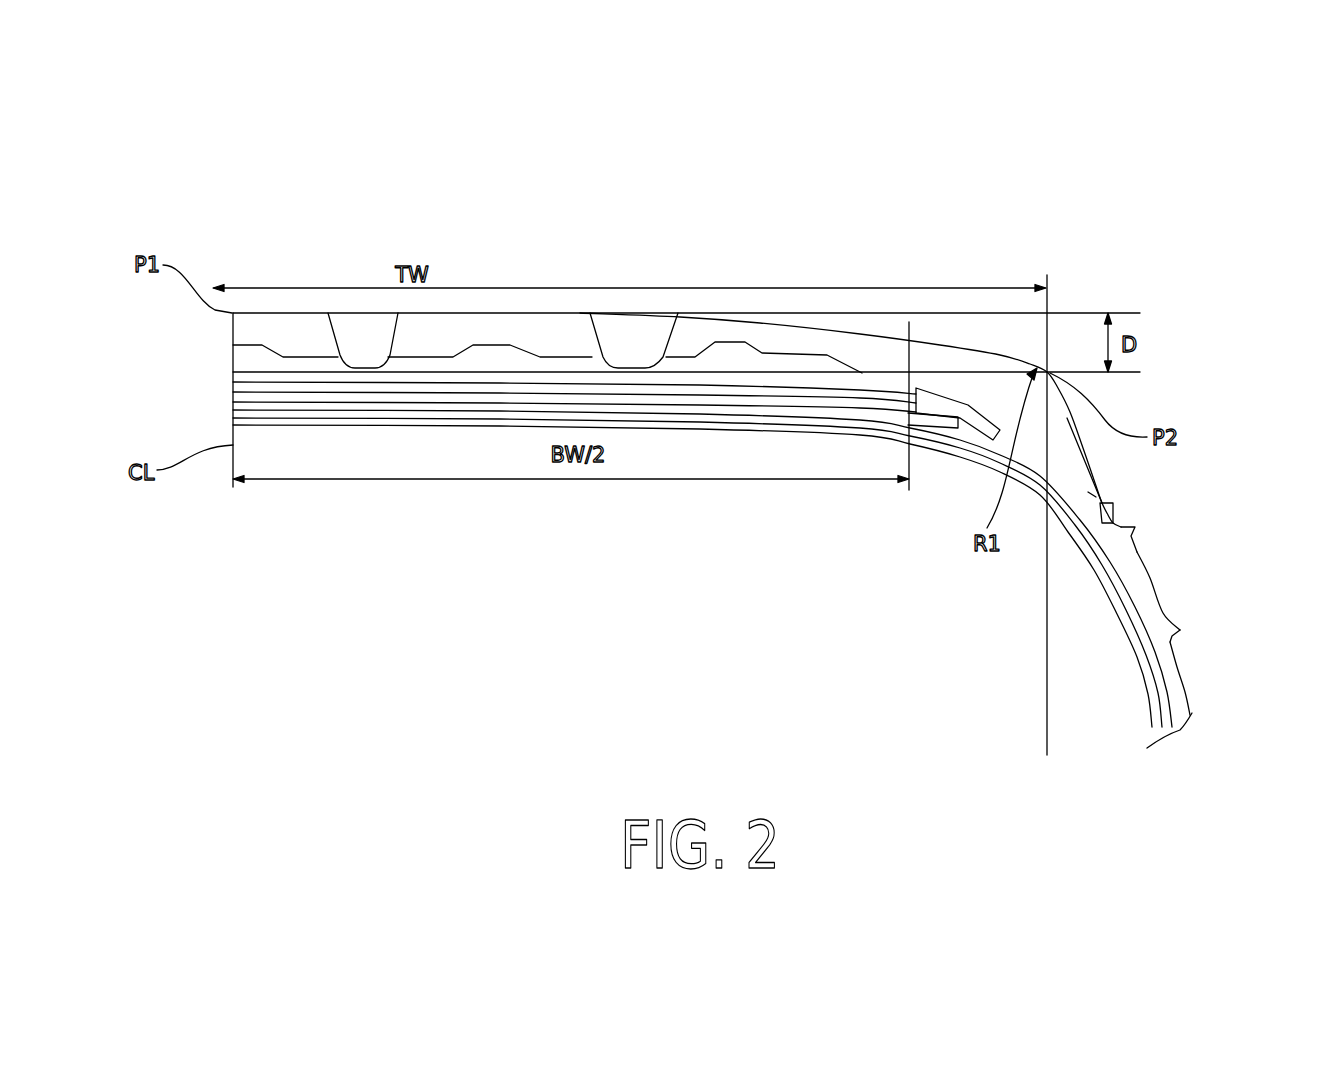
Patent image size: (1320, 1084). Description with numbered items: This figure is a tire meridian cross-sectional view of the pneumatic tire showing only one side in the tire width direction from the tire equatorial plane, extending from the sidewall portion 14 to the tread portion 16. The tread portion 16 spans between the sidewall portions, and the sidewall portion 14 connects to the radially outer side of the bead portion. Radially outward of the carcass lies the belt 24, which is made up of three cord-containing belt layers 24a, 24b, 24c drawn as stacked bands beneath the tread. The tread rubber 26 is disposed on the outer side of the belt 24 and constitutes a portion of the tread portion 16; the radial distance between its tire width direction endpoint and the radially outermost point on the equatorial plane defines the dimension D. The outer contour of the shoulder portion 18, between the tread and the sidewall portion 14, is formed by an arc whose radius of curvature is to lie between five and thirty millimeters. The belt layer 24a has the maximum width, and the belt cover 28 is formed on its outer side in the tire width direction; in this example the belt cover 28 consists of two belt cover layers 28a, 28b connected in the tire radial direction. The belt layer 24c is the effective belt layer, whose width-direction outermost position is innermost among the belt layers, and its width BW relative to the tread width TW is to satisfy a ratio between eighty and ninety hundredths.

The sidewall portion 14 is at (1175, 693).
The tread portion 16 is at (546, 326).
The shoulder portion 18 is at (1077, 423).
The belt 24 is at (577, 272).
The belt layer 24a is at (755, 408).
The belt layer 24b is at (808, 405).
The effective belt layer 24c is at (862, 395).
The tread rubber 26 is at (683, 352).
The belt cover 28 is at (987, 303).
The belt cover layer 28a is at (940, 412).
The belt cover layer 28b is at (990, 397).